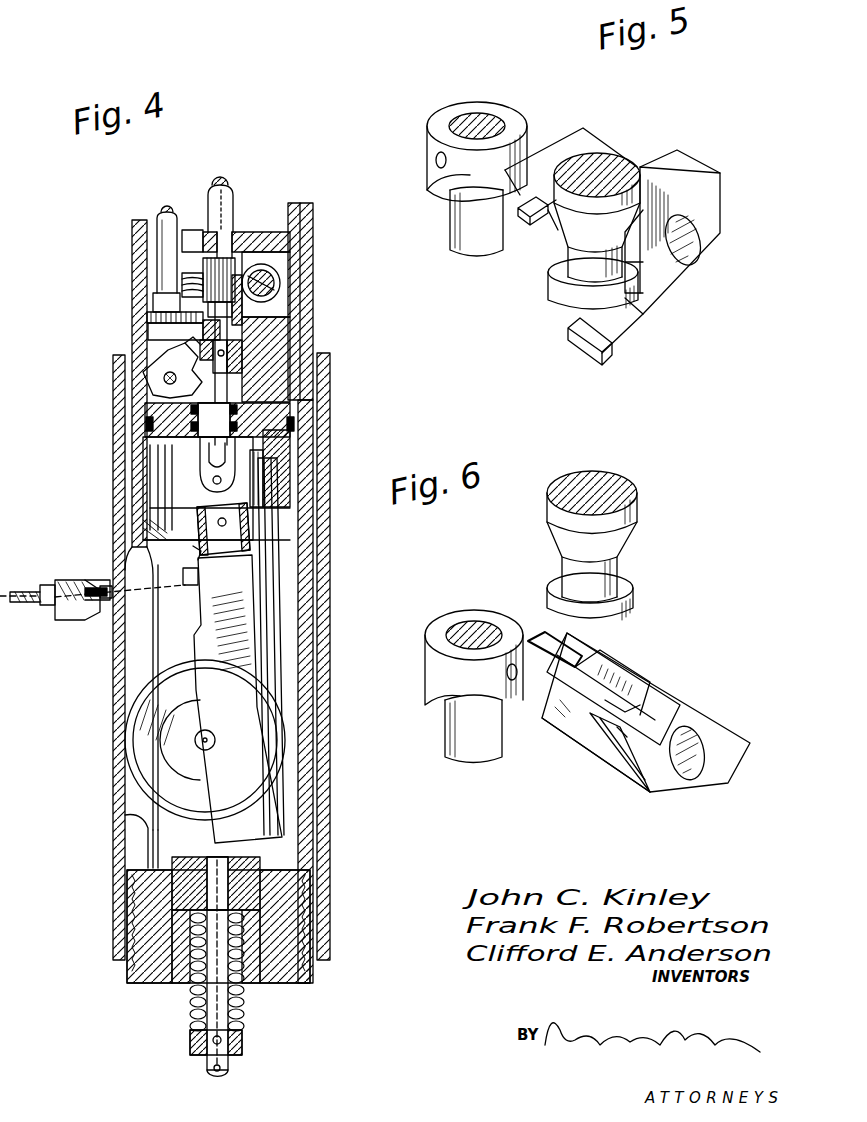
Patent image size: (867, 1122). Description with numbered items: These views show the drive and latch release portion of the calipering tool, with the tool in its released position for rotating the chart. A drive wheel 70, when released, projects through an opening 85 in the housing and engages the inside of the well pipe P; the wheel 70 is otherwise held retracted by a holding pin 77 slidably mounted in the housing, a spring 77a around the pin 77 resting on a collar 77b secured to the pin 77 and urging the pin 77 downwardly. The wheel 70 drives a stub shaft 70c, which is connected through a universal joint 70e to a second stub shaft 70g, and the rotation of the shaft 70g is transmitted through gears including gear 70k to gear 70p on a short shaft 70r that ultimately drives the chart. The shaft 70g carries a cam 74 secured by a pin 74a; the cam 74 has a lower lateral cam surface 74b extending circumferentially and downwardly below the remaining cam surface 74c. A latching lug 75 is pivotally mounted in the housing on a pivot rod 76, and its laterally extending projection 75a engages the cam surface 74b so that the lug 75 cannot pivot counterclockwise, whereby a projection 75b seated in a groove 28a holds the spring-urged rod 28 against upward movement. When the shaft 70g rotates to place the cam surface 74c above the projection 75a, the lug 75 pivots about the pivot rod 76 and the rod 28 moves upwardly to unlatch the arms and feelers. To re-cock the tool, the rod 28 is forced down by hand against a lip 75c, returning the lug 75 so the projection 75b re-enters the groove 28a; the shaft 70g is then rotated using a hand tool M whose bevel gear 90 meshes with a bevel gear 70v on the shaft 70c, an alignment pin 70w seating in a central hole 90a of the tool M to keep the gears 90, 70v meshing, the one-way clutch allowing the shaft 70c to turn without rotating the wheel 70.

In FIG. 4, the rod 28 is at (234, 217).
In FIG. 5, the rod 28 is at (572, 215).
In FIG. 6, the rod 28 is at (548, 515).
In FIG. 5, the groove 28a is at (625, 320).
In FIG. 6, the groove 28a is at (632, 586).
In FIG. 4, the drive wheel 70 is at (125, 735).
In FIG. 4, the stub shaft 70c is at (218, 557).
In FIG. 4, the universal joint 70e is at (200, 476).
In FIG. 5, the stub shaft 70g is at (452, 215).
In FIG. 6, the stub shaft 70g is at (480, 757).
In FIG. 4, the gear 70k is at (283, 297).
In FIG. 4, the gear 70p is at (265, 596).
In FIG. 4, the short shaft 70r is at (168, 212).
In FIG. 4, the bevel gear 70v is at (194, 548).
In FIG. 4, the alignment pin 70w is at (190, 586).
In FIG. 4, the cam 74 is at (265, 356).
In FIG. 5, the cam 74 is at (430, 143).
In FIG. 6, the cam 74 is at (435, 718).
In FIG. 5, the pin 74a is at (434, 166).
In FIG. 6, the pin 74a is at (520, 678).
In FIG. 5, the lower lateral cam surface 74b is at (505, 235).
In FIG. 5, the cam surface 74c is at (450, 192).
In FIG. 6, the cam surface 74c is at (528, 682).
In FIG. 4, the latching lug 75 is at (155, 388).
In FIG. 5, the latching lug 75 is at (600, 150).
In FIG. 6, the latching lug 75 is at (640, 685).
In FIG. 5, the laterally extending projection 75a is at (535, 200).
In FIG. 6, the laterally extending projection 75a is at (585, 650).
In FIG. 5, the projection 75b is at (640, 300).
In FIG. 6, the projection 75b is at (650, 712).
In FIG. 5, the lip 75c is at (590, 355).
In FIG. 6, the lip 75c is at (630, 752).
In FIG. 4, the pivot rod 76 is at (165, 372).
In FIG. 5, the pivot rod 76 is at (695, 248).
In FIG. 6, the pivot rod 76 is at (700, 750).
In FIG. 4, the holding pin 77 is at (213, 858).
In FIG. 4, the spring 77a is at (240, 1000).
In FIG. 4, the collar 77b is at (245, 1044).
In FIG. 4, the opening 85 is at (135, 818).
In FIG. 4, the bevel gear 90 is at (88, 565).
In FIG. 4, the central hole 90a is at (108, 580).
In FIG. 4, the hand tool M is at (28, 575).
In FIG. 4, the well tubing or pipe P is at (110, 626).